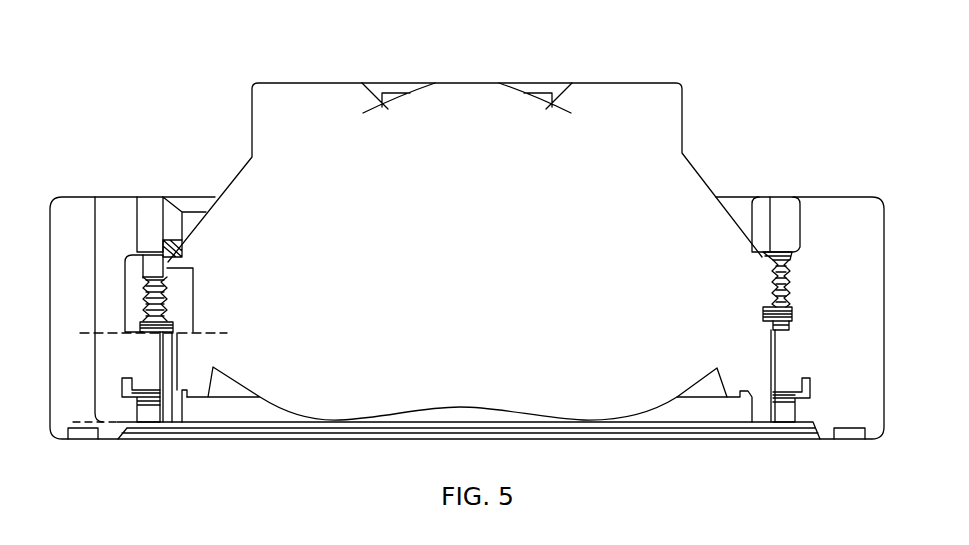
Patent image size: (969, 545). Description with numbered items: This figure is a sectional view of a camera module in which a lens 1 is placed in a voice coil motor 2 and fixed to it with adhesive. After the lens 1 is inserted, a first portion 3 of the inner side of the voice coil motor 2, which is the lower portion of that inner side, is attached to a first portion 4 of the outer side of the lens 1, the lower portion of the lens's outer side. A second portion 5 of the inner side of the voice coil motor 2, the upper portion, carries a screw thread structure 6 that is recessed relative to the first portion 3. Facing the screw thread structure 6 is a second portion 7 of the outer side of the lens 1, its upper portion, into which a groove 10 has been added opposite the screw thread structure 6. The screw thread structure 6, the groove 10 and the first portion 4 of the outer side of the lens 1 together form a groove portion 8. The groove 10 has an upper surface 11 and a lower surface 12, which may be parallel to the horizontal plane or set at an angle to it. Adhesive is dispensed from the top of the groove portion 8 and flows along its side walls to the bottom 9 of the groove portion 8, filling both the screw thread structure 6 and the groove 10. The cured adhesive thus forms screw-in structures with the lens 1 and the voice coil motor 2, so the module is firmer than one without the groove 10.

The lens 1 is at (642, 83).
The voice coil motor 2 is at (855, 197).
The first portion of the inner side of the voice coil motor 3 is at (95, 376).
The first portion of the outer side of the lens 4 is at (183, 371).
The second portion of the inner side of the voice coil motor 5 is at (95, 259).
The screw thread structure 6 is at (125, 288).
The second portion of the outer side of the lens 7 is at (193, 294).
The groove portion 8 is at (166, 261).
The bottom of the groove portion 9 is at (159, 334).
The groove 10 is at (169, 308).
The upper surface of the groove 11 is at (169, 303).
The lower surface of the groove 12 is at (174, 320).